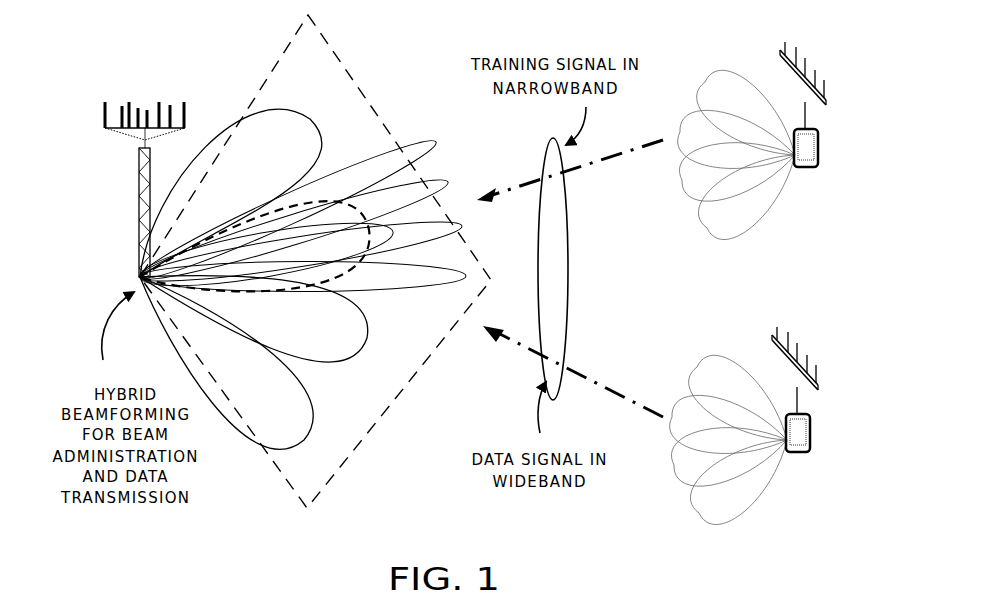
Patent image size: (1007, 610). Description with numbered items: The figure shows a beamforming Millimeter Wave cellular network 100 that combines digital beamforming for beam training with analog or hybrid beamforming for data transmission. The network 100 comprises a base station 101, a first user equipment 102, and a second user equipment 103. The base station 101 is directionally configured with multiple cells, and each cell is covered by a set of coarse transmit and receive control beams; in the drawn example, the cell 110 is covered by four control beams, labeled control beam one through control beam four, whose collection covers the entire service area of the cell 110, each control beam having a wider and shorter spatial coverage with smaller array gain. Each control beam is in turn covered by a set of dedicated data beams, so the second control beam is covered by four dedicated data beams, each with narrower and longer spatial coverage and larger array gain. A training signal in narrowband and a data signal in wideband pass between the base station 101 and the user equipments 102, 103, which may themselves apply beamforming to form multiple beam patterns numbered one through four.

The beamforming mmWave cellular network 100 is at (145, 30).
The base station 101 is at (142, 101).
The first user equipment 102 is at (795, 46).
The second user equipment 103 is at (787, 331).
The cell 110 is at (378, 392).